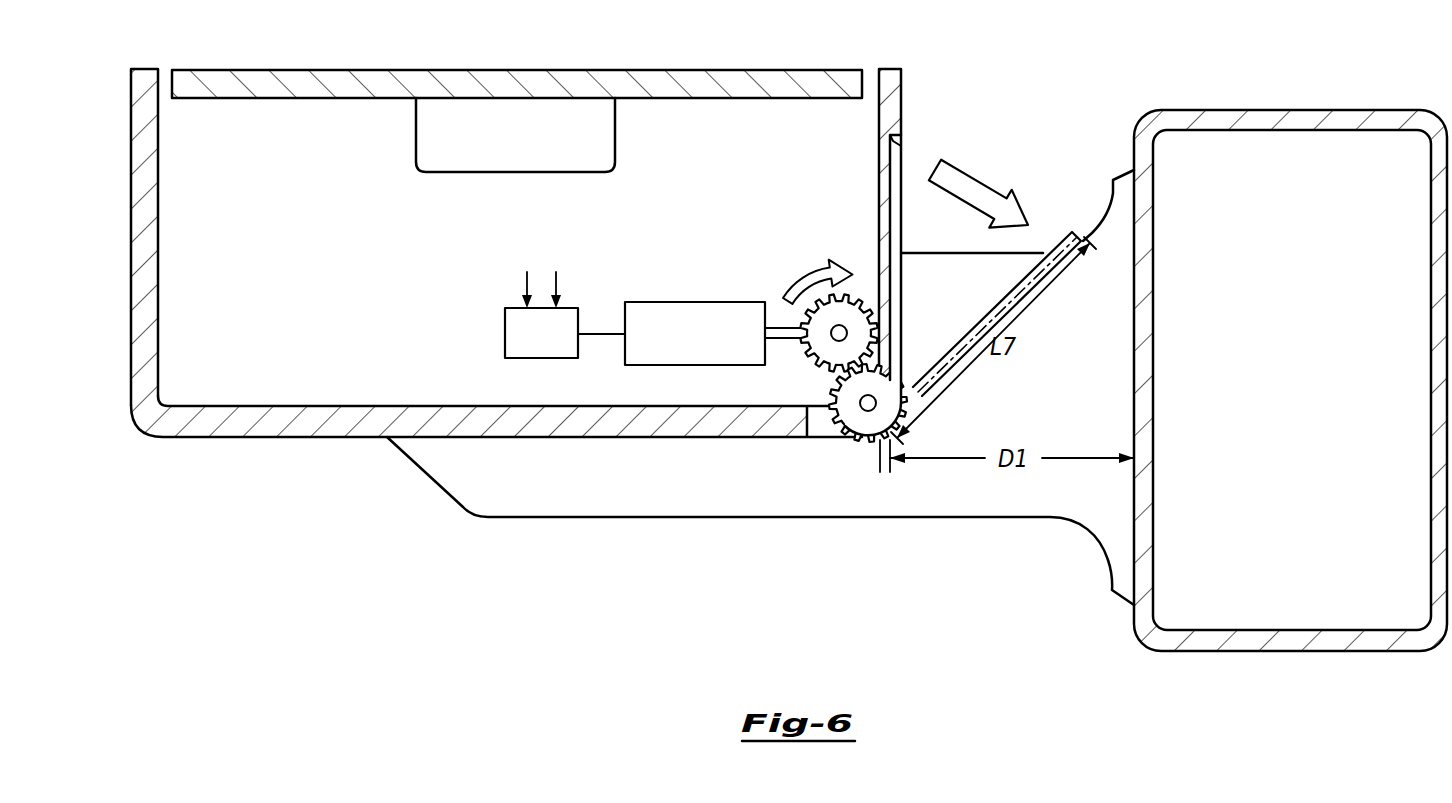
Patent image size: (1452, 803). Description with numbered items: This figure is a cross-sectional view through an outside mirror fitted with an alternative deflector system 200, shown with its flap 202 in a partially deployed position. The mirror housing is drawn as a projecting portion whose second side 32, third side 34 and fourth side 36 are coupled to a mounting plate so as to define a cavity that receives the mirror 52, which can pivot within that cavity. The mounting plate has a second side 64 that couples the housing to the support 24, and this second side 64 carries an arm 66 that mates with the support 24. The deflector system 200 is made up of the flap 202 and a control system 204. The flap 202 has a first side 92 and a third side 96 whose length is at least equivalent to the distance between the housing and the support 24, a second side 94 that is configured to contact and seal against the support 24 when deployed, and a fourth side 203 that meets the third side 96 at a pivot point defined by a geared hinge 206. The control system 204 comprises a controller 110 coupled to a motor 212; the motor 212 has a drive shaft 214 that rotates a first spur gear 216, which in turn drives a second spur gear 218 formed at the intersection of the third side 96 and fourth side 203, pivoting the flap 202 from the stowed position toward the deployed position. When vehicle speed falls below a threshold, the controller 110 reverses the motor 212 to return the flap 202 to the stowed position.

The support 24 is at (1152, 233).
The second side 32 is at (900, 84).
The third side 34 is at (264, 283).
The fourth side 36 is at (132, 330).
The mirror 52 is at (676, 72).
The second side of the mounting plate 64 is at (238, 432).
The arm 66 is at (652, 515).
The first side of the flap 92 is at (903, 226).
The second side of the flap 94 is at (903, 137).
The third side of the flap 96 is at (885, 238).
The controller 110 is at (527, 347).
The deflector system 200 is at (988, 122).
The flap 202 is at (918, 152).
The fourth side of the flap 203 is at (847, 440).
The control system 204 is at (768, 325).
The geared hinge 206 is at (830, 351).
The motor 212 is at (715, 303).
The drive shaft 214 is at (778, 327).
The first spur gear 216 is at (848, 320).
The second spur gear 218 is at (872, 388).